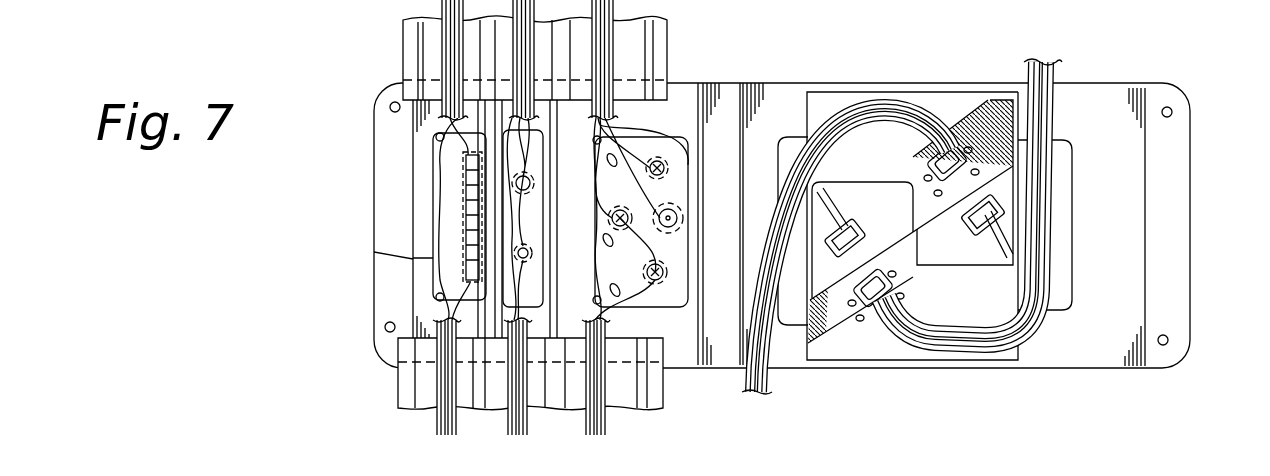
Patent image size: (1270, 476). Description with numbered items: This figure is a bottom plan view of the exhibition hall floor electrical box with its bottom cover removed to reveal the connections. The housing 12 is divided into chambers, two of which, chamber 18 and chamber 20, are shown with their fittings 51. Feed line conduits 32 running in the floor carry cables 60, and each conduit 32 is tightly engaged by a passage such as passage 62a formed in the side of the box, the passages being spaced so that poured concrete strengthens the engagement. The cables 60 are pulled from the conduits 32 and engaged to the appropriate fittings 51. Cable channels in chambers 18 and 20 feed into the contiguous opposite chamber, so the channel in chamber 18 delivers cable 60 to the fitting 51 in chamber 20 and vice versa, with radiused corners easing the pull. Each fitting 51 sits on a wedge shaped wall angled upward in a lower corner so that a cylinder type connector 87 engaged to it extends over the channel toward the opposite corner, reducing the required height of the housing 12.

The housing 12 is at (1117, 295).
The chamber 18 is at (887, 345).
The chamber 20 is at (1000, 295).
The conduit 32 is at (668, 36).
The fitting 51 is at (531, 184).
The cable 60 is at (668, 130).
The passage 62a is at (663, 368).
The cylinder type connector 87 is at (852, 240).